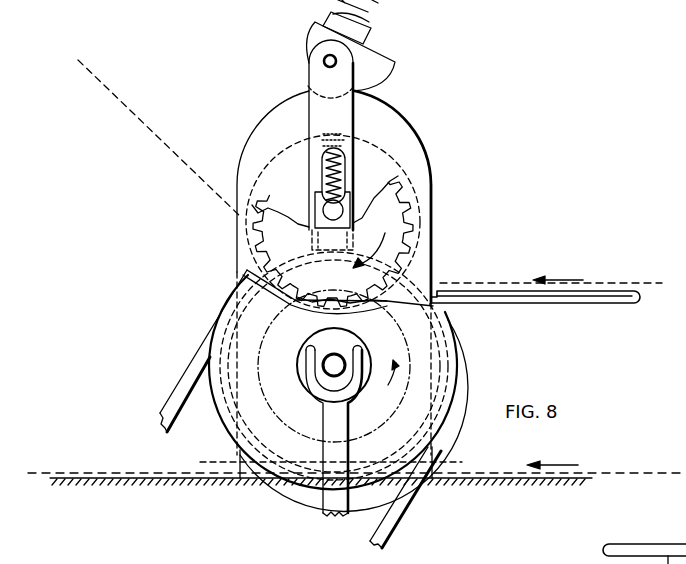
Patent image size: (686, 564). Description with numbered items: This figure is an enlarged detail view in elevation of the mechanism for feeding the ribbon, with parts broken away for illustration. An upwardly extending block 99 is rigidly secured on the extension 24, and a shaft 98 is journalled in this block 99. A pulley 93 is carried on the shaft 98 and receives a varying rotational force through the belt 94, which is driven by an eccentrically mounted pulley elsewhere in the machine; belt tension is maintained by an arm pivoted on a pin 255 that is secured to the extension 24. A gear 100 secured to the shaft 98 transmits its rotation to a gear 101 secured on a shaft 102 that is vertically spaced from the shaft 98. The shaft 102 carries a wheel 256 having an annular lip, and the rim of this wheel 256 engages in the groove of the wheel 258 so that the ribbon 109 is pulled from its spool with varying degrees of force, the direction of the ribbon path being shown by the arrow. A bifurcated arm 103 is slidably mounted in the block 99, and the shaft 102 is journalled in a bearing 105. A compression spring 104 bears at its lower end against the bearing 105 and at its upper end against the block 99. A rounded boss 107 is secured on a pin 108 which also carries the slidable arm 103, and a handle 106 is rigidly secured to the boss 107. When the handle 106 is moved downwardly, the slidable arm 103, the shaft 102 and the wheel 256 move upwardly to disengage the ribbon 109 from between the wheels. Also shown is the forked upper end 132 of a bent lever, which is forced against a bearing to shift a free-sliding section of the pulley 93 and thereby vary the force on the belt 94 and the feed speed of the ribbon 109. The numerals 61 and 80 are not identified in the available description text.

The extension 24 is at (118, 482).
The reference line 61 is at (28, 473).
The support bar 80 is at (662, 563).
The pulley 93 is at (270, 442).
The belt 94 is at (167, 410).
The shaft 98 is at (345, 364).
The block 99 is at (415, 266).
The gear 100 is at (440, 310).
The gear 101 is at (393, 200).
The shaft 102 is at (333, 210).
The bifurcated arm 103 is at (343, 105).
The compression spring 104 is at (343, 172).
The bearing 105 is at (316, 201).
The handle 106 is at (380, 3).
The rounded boss 107 is at (378, 65).
The pin 108 is at (322, 62).
The ribbon 109 is at (128, 112).
The forked upper end 132 is at (338, 393).
The pin 255 is at (268, 563).
The wheel 256 is at (363, 162).
The wheel 258 is at (245, 270).